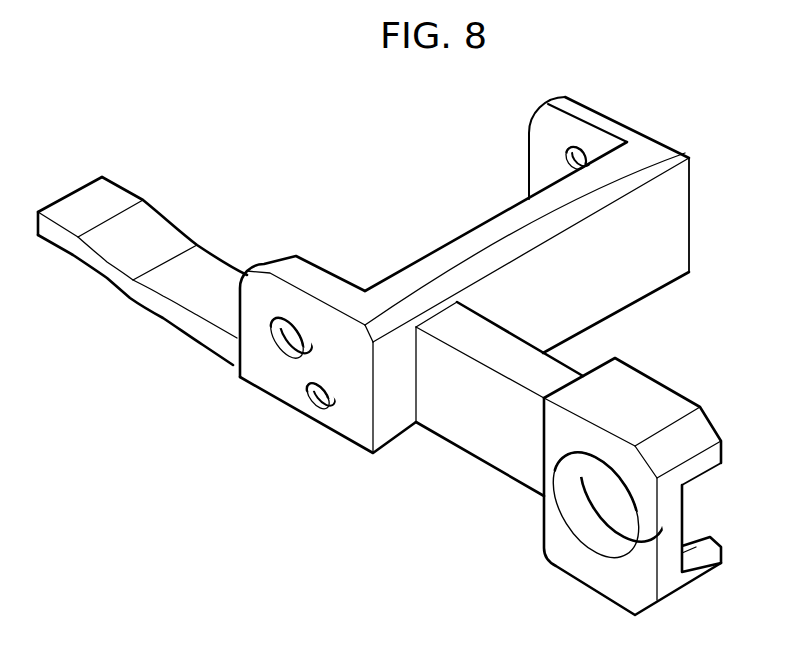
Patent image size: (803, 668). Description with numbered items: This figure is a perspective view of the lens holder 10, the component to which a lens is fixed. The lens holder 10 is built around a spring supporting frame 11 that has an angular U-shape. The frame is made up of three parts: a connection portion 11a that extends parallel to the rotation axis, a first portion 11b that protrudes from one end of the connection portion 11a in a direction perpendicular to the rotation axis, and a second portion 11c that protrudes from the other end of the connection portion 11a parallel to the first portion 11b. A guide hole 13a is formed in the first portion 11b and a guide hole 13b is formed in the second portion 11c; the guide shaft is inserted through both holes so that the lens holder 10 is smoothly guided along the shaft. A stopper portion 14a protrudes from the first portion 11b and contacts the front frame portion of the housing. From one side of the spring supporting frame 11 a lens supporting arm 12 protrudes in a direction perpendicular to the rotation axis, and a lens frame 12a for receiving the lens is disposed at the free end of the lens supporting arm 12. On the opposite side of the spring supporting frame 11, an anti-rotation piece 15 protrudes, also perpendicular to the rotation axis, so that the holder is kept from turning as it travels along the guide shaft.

The lens holder 10 is at (350, 122).
The spring supporting frame 11 is at (469, 266).
The connection portion 11a is at (632, 278).
The first portion 11b is at (296, 373).
The second portion 11c is at (570, 120).
The lens supporting arm 12 is at (568, 477).
The lens frame 12a is at (595, 583).
The guide hole 13a is at (279, 340).
The guide hole 13b is at (568, 159).
The stopper portion 14a is at (308, 405).
The anti-rotation piece 15 is at (157, 312).